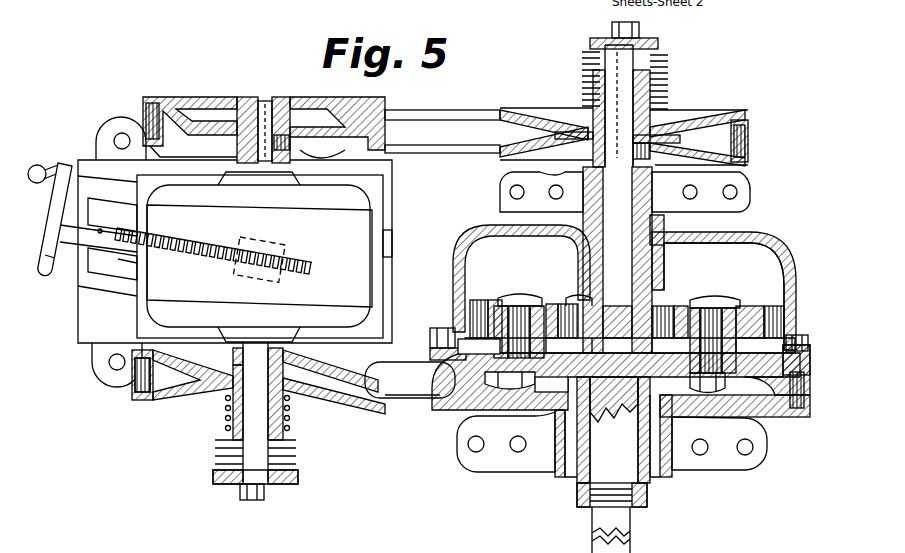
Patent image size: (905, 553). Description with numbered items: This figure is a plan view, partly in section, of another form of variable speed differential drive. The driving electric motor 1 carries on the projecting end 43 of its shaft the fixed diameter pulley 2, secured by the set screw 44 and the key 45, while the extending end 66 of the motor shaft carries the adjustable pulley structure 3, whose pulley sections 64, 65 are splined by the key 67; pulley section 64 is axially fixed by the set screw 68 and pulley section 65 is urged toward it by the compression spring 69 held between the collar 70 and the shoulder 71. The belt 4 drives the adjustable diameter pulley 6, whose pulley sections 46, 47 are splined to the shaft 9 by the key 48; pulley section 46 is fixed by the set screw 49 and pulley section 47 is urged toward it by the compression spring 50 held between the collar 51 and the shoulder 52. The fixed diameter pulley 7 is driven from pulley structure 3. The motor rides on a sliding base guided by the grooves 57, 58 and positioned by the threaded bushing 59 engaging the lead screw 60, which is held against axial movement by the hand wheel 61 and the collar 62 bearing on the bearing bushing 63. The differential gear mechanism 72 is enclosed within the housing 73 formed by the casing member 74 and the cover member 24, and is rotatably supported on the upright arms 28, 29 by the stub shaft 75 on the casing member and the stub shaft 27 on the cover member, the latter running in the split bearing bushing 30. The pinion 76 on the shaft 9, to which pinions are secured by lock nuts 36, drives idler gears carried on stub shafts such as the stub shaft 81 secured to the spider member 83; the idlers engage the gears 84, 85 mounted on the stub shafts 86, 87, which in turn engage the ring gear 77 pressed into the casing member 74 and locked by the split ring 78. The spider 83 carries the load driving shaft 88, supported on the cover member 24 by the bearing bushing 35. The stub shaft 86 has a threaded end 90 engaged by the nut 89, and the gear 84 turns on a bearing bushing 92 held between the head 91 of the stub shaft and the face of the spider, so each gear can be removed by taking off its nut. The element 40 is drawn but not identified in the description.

The driving electric motor 1 is at (337, 239).
The pulley structure 2 is at (372, 118).
The pulley structure 3 is at (356, 393).
The belt 4 is at (440, 110).
The pulley 6 is at (718, 123).
The pulley 7 is at (436, 405).
The shaft 9 is at (640, 58).
The cover member 24 is at (765, 418).
The stub shaft 27 is at (579, 483).
The upright arm 28 is at (742, 195).
The upright arm 29 is at (720, 471).
The split bearing bushing 30 is at (558, 478).
The bearing bushing 35 is at (650, 483).
The lock nuts 36 is at (707, 310).
The nut 40 is at (778, 337).
The projecting end of the motor shaft 43 is at (272, 105).
The set screw 44 is at (290, 142).
The key 45 is at (258, 103).
The pulley section 46 is at (748, 160).
The pulley section 47 is at (748, 117).
The key 48 is at (590, 66).
The set screw 49 is at (650, 153).
The compression spring 50 is at (666, 80).
The collar 51 is at (658, 42).
The shoulder 52 is at (662, 128).
The groove 57 is at (112, 215).
The groove 58 is at (125, 263).
The threaded bushing 59 is at (268, 256).
The lead screw 60 is at (112, 264).
The hand wheel 61 is at (63, 165).
The collar 62 is at (108, 227).
The bearing bushing 63 is at (72, 248).
The pulley section 64 is at (385, 362).
The pulley section 65 is at (400, 366).
The extending end of the motor shaft 66 is at (240, 451).
The key 67 is at (290, 452).
The set screw 68 is at (233, 361).
The compression spring 69 is at (290, 432).
The collar 70 is at (280, 488).
The shoulder 71 is at (212, 392).
The differential gear mechanism 72 is at (478, 256).
The housing 73 is at (720, 269).
The casing member 74 is at (755, 245).
The stub shaft 75 is at (666, 230).
The pinion 76 is at (652, 320).
The ring gear 77 is at (458, 312).
The split ring 78 is at (452, 334).
The stub shaft 81 is at (580, 299).
The spider member 83 is at (462, 404).
The gear 84 is at (481, 302).
The gear 85 is at (768, 325).
The stub shaft 86 is at (517, 300).
The stub shaft 87 is at (742, 314).
The load driving shaft 88 is at (622, 516).
The nut 89 is at (536, 385).
The threaded end 90 is at (509, 380).
The head 91 is at (551, 304).
The bearing bushing 92 is at (497, 348).